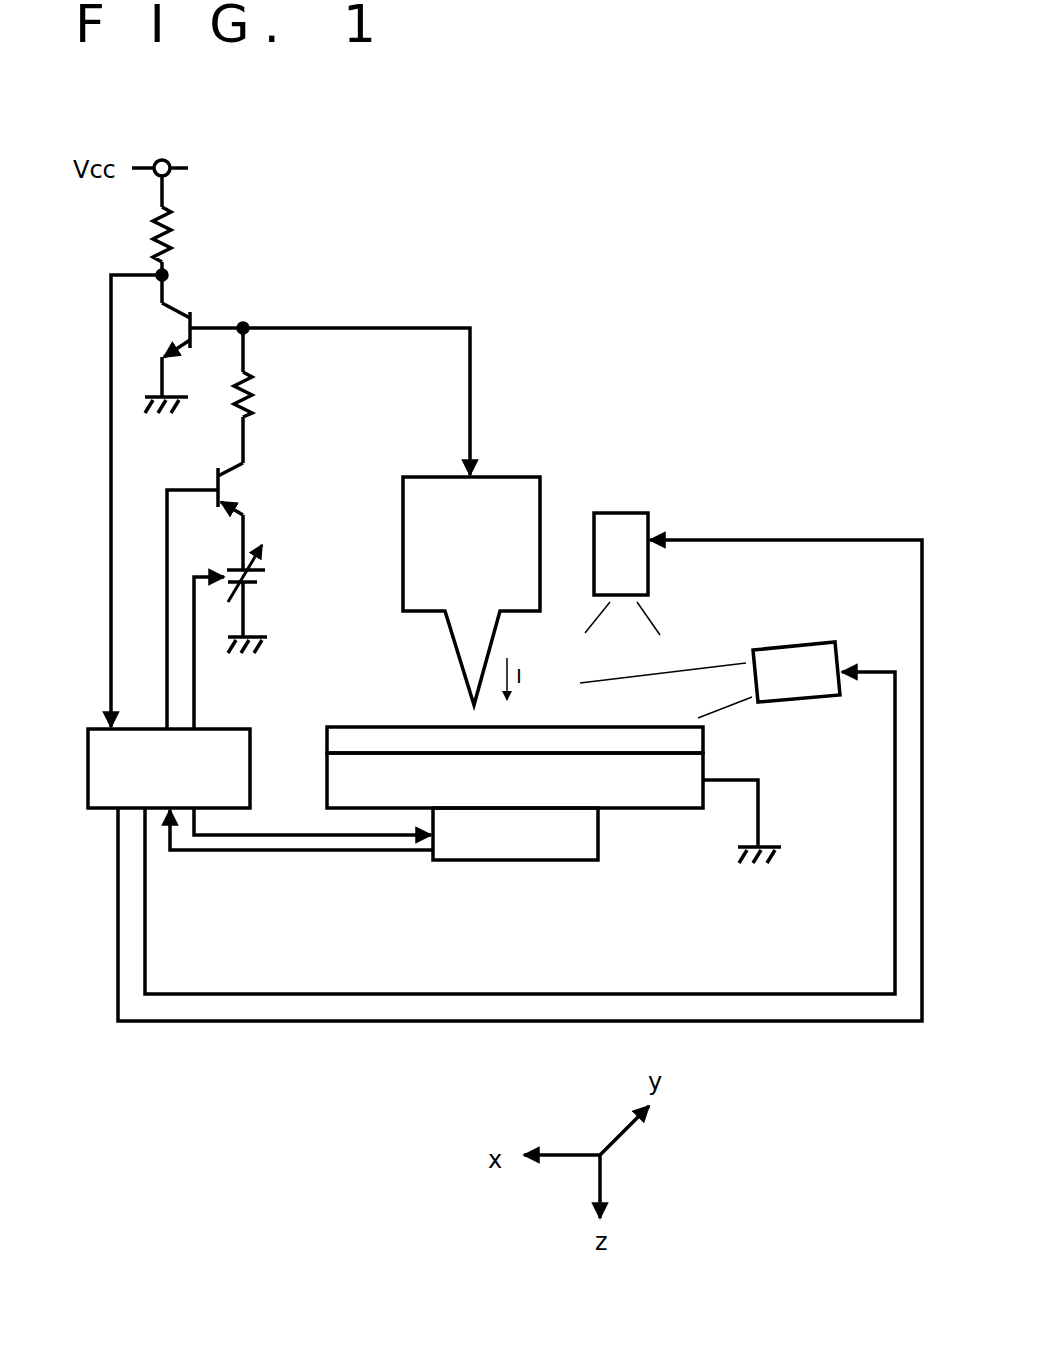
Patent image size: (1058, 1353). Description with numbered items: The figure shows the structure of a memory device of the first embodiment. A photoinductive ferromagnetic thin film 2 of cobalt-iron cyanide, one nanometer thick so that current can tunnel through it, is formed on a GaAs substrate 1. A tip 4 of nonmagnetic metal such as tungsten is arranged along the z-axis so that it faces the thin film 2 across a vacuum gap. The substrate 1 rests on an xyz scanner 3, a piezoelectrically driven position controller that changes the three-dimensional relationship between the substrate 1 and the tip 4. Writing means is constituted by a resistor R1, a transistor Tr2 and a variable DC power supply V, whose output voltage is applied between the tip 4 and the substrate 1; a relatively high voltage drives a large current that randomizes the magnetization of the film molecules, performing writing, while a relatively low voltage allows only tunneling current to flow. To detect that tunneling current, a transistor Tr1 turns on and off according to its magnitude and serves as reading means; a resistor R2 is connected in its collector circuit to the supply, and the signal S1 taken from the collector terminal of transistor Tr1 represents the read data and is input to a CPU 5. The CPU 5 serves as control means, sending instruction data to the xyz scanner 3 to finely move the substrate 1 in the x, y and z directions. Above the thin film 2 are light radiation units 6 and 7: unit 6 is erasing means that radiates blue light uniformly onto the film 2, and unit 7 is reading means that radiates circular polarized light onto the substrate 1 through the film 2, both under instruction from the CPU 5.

The GaAs substrate 1 is at (692, 770).
The photoinductive ferromagnetic thin film 2 is at (692, 738).
The xyz scanner 3 is at (585, 850).
The tip 4 is at (473, 653).
The CPU 5 is at (237, 745).
The light radiation unit 6 is at (635, 530).
The light radiation unit 7 is at (798, 660).
The resistor R1 is at (260, 390).
The resistor R2 is at (178, 236).
The transistor Tr1 is at (186, 306).
The transistor Tr2 is at (240, 470).
The signal S1 is at (158, 272).
The variable DC power supply V is at (266, 584).